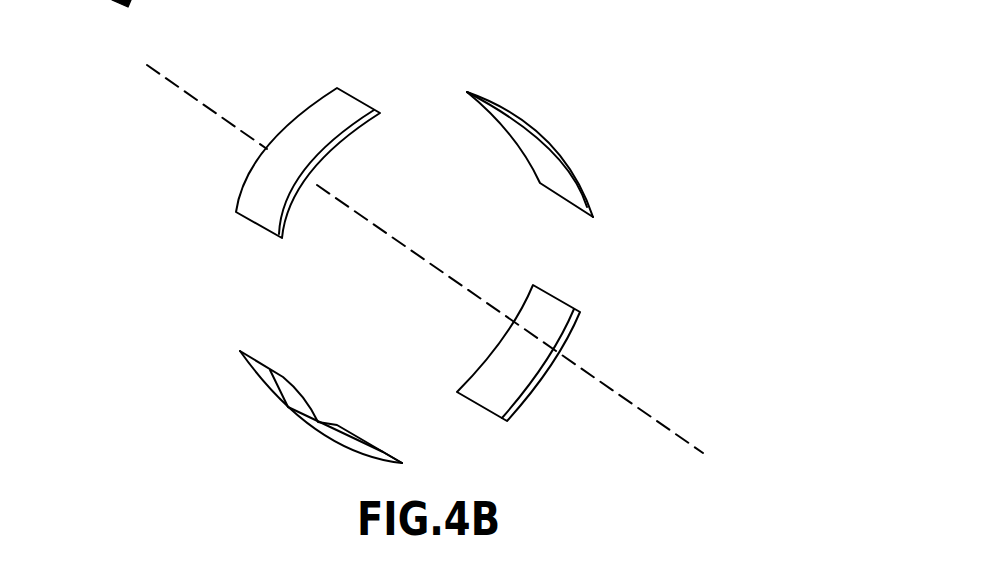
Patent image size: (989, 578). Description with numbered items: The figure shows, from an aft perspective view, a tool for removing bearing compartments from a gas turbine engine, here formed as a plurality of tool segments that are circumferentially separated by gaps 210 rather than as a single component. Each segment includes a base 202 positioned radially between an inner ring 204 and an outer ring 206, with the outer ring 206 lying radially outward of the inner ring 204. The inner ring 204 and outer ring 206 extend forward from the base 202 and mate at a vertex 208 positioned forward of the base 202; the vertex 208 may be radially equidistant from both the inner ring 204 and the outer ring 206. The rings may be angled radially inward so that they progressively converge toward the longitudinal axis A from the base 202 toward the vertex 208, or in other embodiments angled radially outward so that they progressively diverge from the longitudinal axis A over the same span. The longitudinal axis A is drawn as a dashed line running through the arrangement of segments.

The base 202 is at (523, 117).
The inner ring 204 is at (557, 187).
The outer ring 206 is at (563, 145).
The vertex 208 is at (545, 154).
The gaps 210 is at (252, 290).
The longitudinal axis A is at (707, 455).